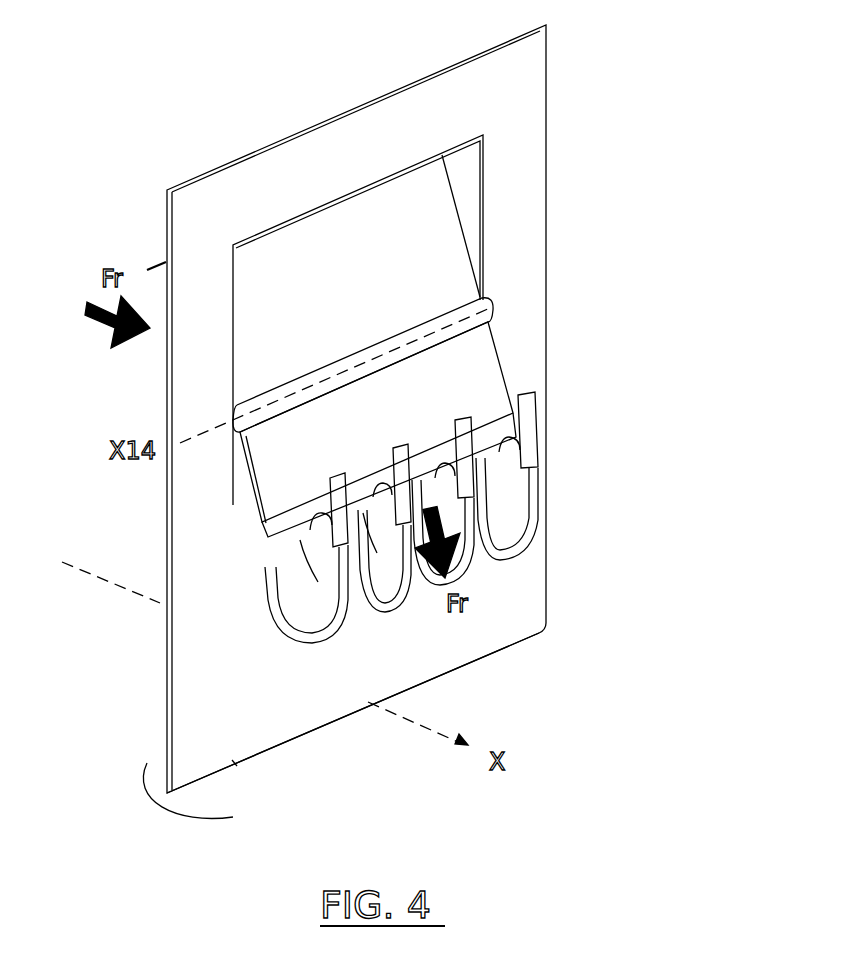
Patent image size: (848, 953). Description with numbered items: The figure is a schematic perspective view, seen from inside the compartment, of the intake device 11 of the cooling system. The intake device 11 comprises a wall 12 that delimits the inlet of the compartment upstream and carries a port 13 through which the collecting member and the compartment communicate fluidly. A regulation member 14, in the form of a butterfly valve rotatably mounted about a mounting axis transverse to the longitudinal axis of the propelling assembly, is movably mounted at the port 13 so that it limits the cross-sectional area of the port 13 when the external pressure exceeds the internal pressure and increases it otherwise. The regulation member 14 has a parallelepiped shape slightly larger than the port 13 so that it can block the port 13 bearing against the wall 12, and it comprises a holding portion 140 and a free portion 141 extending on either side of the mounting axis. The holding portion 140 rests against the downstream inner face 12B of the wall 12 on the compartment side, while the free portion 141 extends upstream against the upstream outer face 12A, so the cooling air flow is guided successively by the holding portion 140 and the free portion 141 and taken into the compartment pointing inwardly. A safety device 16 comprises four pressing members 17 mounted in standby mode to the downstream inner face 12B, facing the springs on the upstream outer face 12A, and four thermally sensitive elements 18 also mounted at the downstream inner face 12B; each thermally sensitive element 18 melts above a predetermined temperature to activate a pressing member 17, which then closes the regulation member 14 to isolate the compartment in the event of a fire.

The intake device 11 is at (346, 409).
The wall 12 is at (241, 739).
The upstream outer face 12A is at (219, 798).
The downstream inner face 12B is at (183, 760).
The port 13 is at (463, 172).
The regulation member 14 is at (452, 375).
The holding portion 140 is at (497, 353).
The free portion 141 is at (462, 222).
The safety device 16 is at (454, 537).
The pressing member 17 is at (538, 470).
The thermally sensitive element 18 is at (537, 567).